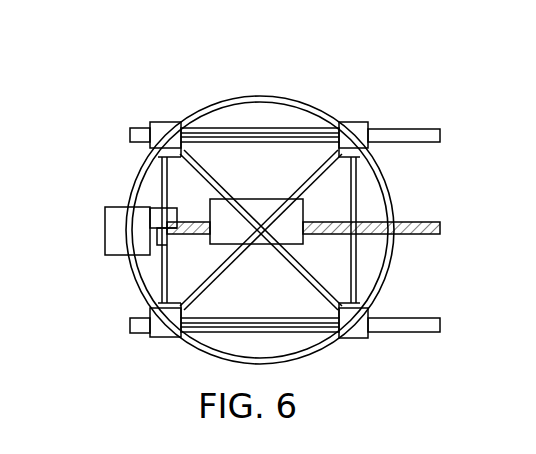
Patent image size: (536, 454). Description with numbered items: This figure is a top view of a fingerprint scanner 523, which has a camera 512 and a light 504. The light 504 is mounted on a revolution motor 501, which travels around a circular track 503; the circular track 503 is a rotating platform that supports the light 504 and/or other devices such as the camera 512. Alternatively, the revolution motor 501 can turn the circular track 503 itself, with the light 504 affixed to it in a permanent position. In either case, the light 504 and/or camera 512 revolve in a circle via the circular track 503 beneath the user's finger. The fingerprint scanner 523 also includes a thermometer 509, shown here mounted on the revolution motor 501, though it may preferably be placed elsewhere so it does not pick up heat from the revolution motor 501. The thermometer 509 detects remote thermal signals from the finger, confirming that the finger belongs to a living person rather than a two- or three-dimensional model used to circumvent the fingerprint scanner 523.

The fingerprint scanner 523 is at (260, 193).
The circular track 503 is at (230, 231).
The camera 512 is at (168, 213).
The thermometer 509 is at (167, 259).
The light 504 is at (157, 241).
The revolution motor 501 is at (108, 269).